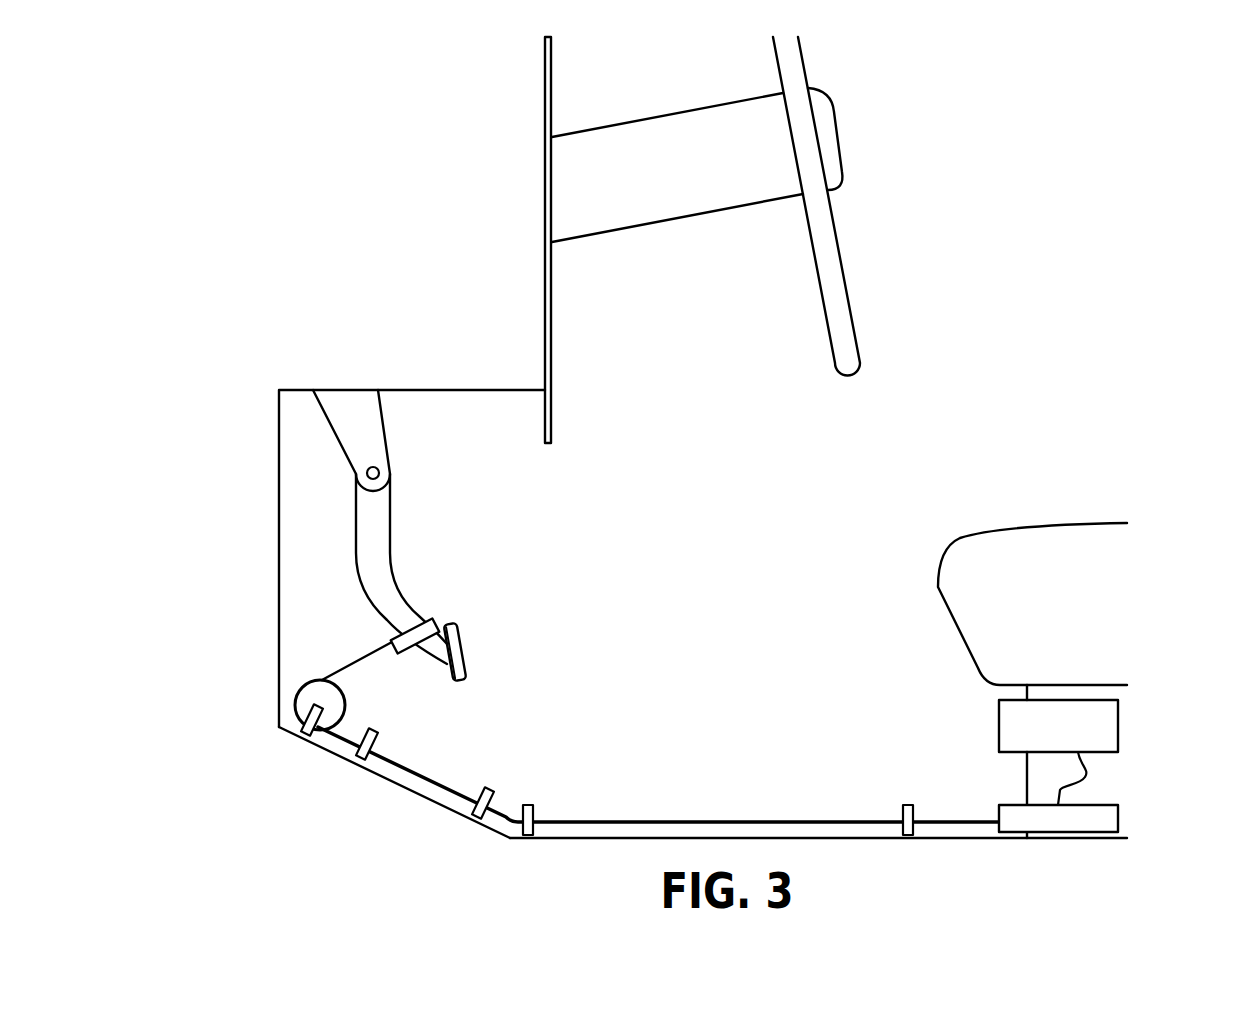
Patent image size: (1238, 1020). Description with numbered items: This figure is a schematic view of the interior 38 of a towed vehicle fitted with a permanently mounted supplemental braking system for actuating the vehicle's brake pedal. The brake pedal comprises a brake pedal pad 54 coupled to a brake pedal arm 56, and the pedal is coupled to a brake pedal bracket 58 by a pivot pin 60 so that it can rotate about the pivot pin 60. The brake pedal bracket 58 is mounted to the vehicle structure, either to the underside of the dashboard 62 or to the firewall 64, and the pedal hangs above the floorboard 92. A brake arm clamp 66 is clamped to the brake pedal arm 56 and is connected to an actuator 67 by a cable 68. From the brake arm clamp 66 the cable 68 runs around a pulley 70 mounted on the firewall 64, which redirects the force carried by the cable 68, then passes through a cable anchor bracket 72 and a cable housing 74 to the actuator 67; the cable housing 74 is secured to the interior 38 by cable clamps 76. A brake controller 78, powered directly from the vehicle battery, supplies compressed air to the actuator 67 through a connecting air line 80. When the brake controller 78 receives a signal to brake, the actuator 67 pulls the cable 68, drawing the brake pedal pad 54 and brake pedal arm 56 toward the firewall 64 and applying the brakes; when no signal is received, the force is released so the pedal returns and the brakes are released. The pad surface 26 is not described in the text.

The pedal pad surface 26 is at (477, 657).
The interior 38 is at (1009, 273).
The brake pedal pad 54 is at (458, 633).
The brake pedal arm 56 is at (373, 572).
The brake pedal bracket 58 is at (345, 402).
The pivot pin 60 is at (380, 472).
The dashboard 62 is at (533, 383).
The firewall 64 is at (278, 690).
The brake arm clamp 66 is at (433, 612).
The actuator 67 is at (1002, 802).
The cable 68 is at (353, 655).
The pulley 70 is at (303, 700).
The cable anchor bracket 72 is at (347, 772).
The cable housing 74 is at (435, 793).
The cable clamps 76 is at (488, 790).
The brake controller 78 is at (1118, 718).
The connecting air line 80 is at (1088, 773).
The floorboard 92 is at (505, 836).